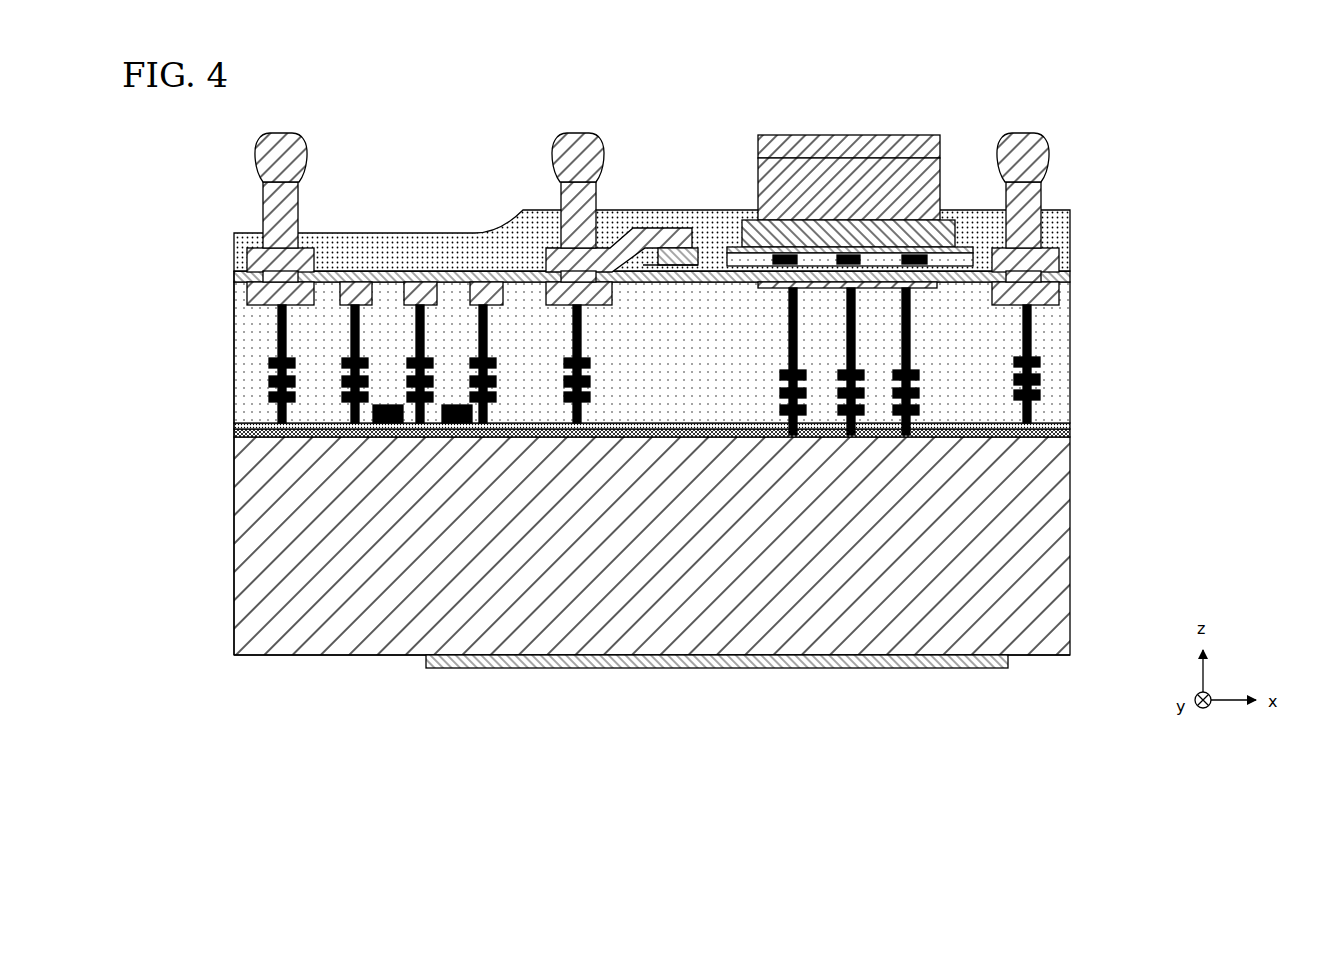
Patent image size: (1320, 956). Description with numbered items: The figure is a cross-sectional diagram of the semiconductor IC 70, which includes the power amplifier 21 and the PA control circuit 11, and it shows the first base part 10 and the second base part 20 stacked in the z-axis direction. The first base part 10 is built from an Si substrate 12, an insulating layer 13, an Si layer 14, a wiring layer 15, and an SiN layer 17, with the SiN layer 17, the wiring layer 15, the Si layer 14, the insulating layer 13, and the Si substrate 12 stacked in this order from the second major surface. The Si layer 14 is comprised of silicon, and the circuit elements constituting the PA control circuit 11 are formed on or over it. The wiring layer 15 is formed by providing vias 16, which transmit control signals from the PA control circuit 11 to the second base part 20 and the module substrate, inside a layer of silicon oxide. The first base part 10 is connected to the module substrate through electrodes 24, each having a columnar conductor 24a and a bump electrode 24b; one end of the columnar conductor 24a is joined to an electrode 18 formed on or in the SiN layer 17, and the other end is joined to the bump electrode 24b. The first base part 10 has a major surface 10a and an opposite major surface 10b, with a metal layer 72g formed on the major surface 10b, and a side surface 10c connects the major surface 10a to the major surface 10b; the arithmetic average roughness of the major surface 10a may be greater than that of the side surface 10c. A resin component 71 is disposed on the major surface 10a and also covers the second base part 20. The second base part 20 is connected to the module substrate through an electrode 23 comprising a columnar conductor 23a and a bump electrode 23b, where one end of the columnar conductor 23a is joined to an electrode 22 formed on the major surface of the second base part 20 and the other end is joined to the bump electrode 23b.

The first base part 10 is at (675, 467).
The major surface 10a is at (368, 266).
The major surface 10b is at (283, 657).
The side surface 10c is at (233, 508).
The PA control circuit 11 is at (480, 443).
The Si substrate 12 is at (1060, 538).
The insulating layer 13 is at (1062, 437).
The Si layer 14 is at (1060, 425).
The wiring layer 15 is at (1062, 372).
The vias 16 is at (278, 333).
The SiN layer 17 is at (1062, 277).
The electrode 18 is at (256, 262).
The second base part 20 is at (973, 328).
The power amplifier 21 is at (793, 267).
The electrode 22 is at (943, 235).
The electrode 23 is at (794, 177).
The columnar conductor 23a is at (767, 205).
The bump electrode 23b is at (767, 148).
The electrodes 24 is at (655, 190).
The columnar conductor 24a is at (272, 204).
The bump electrode 24b is at (283, 152).
The semiconductor IC 70 is at (675, 373).
The resin component 71 is at (1065, 230).
The metal layer 72g is at (712, 657).